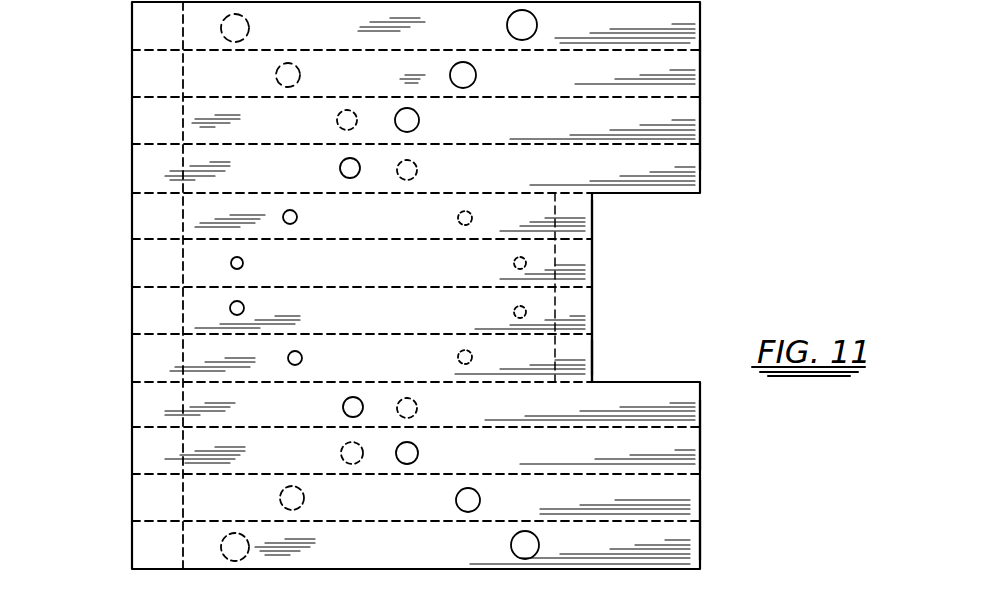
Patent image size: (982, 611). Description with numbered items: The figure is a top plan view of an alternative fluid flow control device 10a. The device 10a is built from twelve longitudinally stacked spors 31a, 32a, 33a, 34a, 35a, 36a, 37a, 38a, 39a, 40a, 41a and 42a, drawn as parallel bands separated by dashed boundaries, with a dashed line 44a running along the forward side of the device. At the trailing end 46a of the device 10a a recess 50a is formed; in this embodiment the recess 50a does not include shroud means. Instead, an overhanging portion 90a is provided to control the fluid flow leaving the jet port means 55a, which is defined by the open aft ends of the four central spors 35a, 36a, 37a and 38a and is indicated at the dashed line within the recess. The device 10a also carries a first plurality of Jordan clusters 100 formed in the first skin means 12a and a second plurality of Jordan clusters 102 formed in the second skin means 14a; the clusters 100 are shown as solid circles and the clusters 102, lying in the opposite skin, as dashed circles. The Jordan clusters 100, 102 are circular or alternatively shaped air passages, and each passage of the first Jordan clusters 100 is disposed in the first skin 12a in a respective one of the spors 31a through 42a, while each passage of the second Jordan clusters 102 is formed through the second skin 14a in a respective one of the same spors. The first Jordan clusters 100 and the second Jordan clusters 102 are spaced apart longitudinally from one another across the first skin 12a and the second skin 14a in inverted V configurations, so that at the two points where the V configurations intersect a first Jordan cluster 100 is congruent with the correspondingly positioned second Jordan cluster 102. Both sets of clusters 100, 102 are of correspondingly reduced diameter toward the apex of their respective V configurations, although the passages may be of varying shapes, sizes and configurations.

The fluid flow control device 10a is at (130, 80).
The first skin means 12a is at (680, 500).
The second skin means 14a is at (701, 446).
The spor 31a is at (333, 37).
The spor 32a is at (376, 85).
The spor 33a is at (298, 133).
The spor 34a is at (300, 181).
The central spor 35a is at (383, 230).
The central spor 36a is at (383, 277).
The central spor 37a is at (383, 325).
The central spor 38a is at (383, 372).
The spor 39a is at (313, 419).
The spor 40a is at (313, 466).
The spor 41a is at (378, 509).
The spor 42a is at (380, 557).
The left fold line 44a is at (132, 277).
The trailing end 46a is at (701, 155).
The recess 50a is at (626, 290).
The jet port means 55a is at (553, 258).
The overhanging portion 90a is at (593, 350).
The first Jordan clusters 100 is at (520, 40).
The second Jordan clusters 102 is at (276, 74).